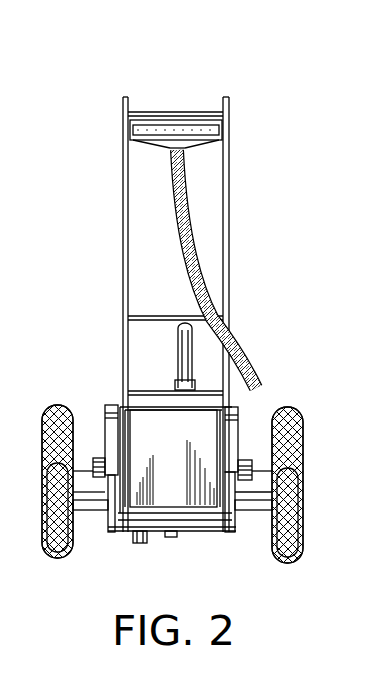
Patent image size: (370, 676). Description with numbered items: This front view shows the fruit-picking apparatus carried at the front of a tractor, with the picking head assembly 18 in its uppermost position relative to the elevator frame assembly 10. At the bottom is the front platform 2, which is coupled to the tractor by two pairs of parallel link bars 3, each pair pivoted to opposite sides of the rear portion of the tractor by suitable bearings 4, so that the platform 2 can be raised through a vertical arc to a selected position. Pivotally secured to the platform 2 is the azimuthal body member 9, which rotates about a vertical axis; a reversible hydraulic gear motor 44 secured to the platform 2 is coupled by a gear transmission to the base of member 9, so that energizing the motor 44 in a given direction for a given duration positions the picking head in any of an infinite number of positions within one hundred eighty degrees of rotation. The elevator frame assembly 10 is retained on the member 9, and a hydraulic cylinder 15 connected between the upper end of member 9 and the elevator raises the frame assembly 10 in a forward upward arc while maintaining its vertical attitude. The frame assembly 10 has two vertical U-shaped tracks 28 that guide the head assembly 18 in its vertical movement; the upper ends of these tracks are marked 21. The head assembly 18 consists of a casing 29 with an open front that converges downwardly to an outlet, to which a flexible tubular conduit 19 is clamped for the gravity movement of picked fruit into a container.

The front platform 2 is at (207, 530).
The parallel link bars 3 is at (99, 461).
The bearings 4 is at (177, 107).
The azimuthal body member 9 is at (177, 464).
The elevator frame assembly 10 is at (230, 245).
The hydraulic cylinder 15 is at (178, 346).
The picking head assembly 18 is at (155, 120).
The flexible tubular conduit 19 is at (178, 244).
The upright post ends 21 is at (123, 98).
The U-shaped tracks 28 is at (123, 161).
The casing 29 is at (160, 141).
The reversible hydraulic gear motor 44 is at (138, 542).